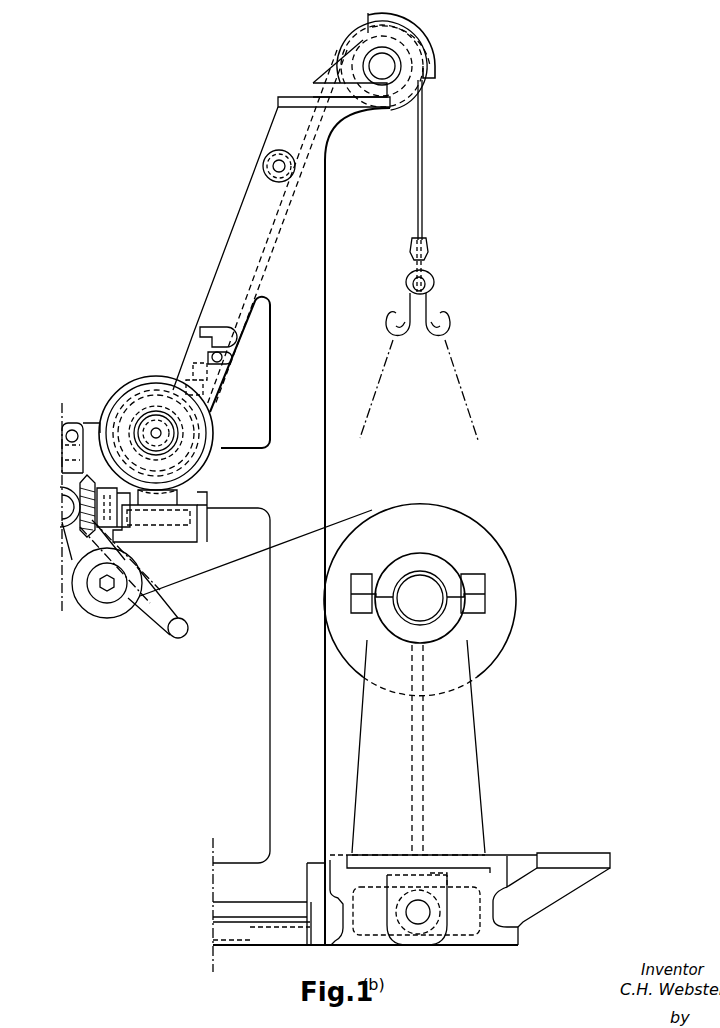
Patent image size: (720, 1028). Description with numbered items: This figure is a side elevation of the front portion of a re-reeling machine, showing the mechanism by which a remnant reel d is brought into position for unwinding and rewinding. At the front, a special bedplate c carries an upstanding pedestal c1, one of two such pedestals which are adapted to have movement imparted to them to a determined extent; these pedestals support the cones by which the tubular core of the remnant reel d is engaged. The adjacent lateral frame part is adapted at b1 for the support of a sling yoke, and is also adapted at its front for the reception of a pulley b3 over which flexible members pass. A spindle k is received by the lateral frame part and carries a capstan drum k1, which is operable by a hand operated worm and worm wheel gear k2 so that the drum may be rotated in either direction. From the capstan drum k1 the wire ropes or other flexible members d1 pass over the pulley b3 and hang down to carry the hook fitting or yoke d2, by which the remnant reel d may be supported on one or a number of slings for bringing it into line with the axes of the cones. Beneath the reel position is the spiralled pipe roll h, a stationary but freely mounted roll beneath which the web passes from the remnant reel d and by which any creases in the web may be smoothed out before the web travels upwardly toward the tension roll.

The adapted part of lateral frame part b1 is at (240, 235).
The pulley b3 is at (358, 47).
The remnant reel d is at (463, 526).
The wire ropes or flexible members d1 is at (423, 187).
The hook fitting or sling yoke d2 is at (423, 273).
The bedplate c is at (455, 880).
The upstanding pedestal c1 is at (458, 750).
The spindle k is at (155, 430).
The capstan drum k1 is at (122, 393).
The hand operated worm and worm wheel gear k2 is at (165, 505).
The spiralled pipe roll h is at (120, 613).